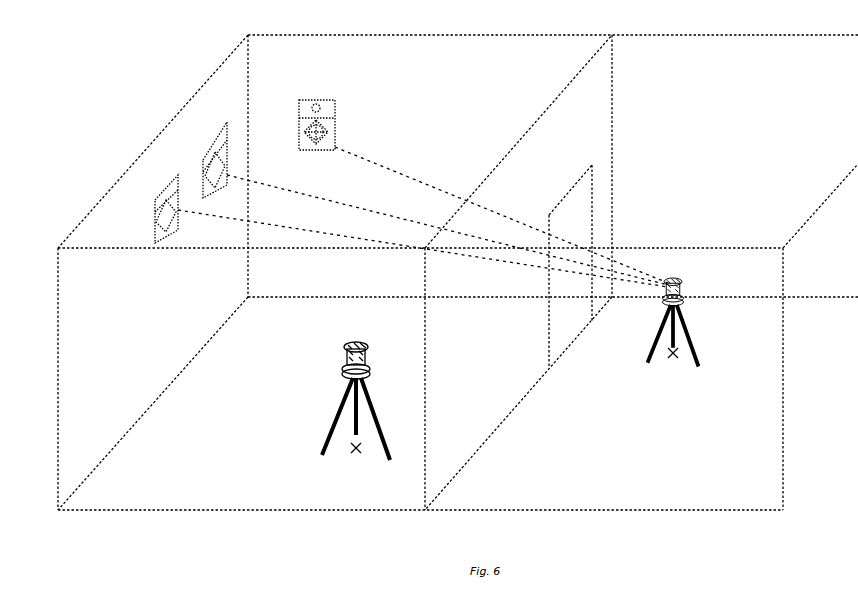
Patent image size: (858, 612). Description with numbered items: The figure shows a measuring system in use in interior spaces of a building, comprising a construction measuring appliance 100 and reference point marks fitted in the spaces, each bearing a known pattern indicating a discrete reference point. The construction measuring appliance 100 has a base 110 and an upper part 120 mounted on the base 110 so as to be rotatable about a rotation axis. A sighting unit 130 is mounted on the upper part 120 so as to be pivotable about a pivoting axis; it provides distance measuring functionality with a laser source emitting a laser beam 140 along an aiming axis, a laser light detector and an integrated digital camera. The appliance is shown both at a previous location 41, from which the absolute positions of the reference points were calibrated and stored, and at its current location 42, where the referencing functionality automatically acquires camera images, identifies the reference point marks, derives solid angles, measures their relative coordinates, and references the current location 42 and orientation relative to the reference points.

The construction measuring appliance 100 is at (507, 339).
The base 110 is at (341, 381).
The upper part 120 is at (342, 364).
The sighting unit 130 is at (364, 357).
The laser beam 140 is at (431, 189).
The previous location 41 is at (349, 457).
The current location 42 is at (669, 362).